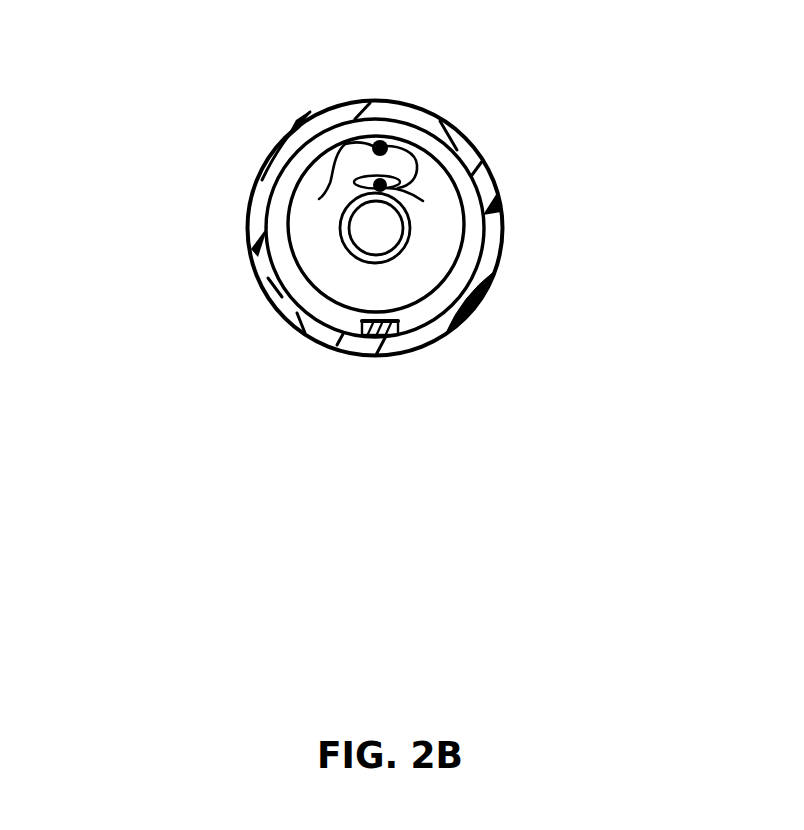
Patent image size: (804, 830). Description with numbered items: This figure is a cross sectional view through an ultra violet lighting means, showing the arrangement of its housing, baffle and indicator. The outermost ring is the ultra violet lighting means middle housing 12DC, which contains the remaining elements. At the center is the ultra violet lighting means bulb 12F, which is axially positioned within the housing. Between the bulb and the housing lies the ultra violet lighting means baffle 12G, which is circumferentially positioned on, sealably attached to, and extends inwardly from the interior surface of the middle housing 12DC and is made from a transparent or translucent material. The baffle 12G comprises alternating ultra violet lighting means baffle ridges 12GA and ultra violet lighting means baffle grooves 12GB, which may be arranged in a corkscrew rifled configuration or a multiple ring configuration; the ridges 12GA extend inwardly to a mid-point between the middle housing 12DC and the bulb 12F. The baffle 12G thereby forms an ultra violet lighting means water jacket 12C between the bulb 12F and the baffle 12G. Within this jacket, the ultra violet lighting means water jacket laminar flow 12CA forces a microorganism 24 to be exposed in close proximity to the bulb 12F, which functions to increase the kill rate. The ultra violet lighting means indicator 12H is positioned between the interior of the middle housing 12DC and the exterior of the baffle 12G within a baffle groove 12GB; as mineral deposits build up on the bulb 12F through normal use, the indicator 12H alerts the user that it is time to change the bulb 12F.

The ultra violet lighting means water jacket 12C is at (275, 228).
The ultra violet lighting means water jacket laminar flow 12CA is at (417, 161).
The ultra violet lighting means middle housing 12DC is at (443, 328).
The ultra violet lighting means bulb 12F is at (380, 228).
The ultra violet lighting means baffle 12G is at (463, 182).
The ultra violet lighting means baffle ridges 12GA is at (320, 296).
The ultra violet lighting means baffle grooves 12GB is at (403, 136).
The ultra violet lighting means indicator 12H is at (383, 354).
The microorganism 24 is at (345, 144).